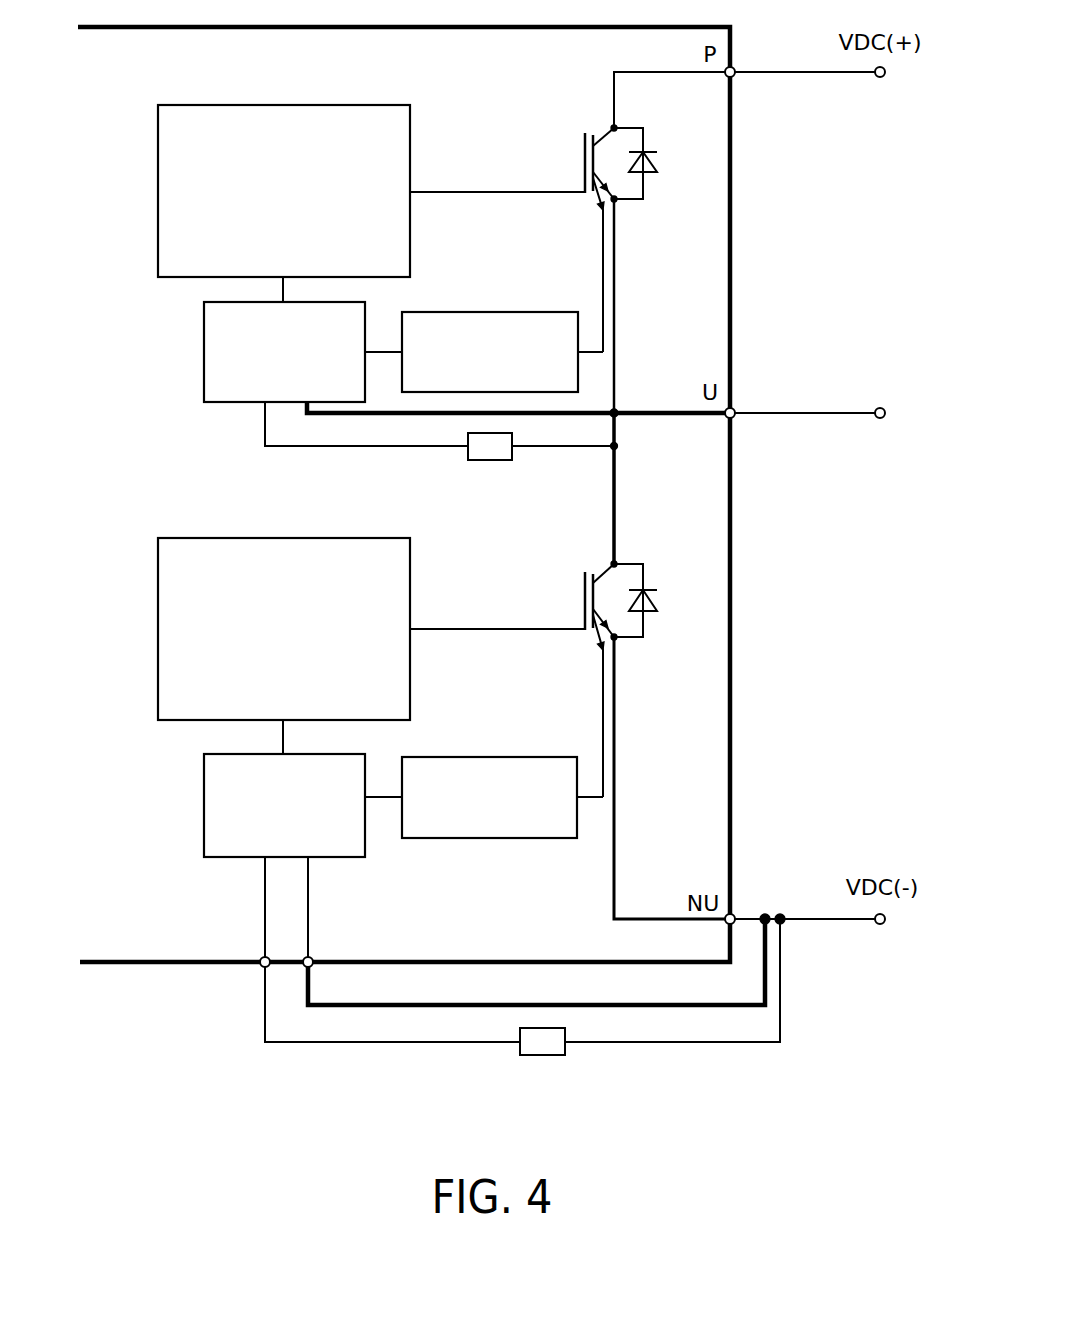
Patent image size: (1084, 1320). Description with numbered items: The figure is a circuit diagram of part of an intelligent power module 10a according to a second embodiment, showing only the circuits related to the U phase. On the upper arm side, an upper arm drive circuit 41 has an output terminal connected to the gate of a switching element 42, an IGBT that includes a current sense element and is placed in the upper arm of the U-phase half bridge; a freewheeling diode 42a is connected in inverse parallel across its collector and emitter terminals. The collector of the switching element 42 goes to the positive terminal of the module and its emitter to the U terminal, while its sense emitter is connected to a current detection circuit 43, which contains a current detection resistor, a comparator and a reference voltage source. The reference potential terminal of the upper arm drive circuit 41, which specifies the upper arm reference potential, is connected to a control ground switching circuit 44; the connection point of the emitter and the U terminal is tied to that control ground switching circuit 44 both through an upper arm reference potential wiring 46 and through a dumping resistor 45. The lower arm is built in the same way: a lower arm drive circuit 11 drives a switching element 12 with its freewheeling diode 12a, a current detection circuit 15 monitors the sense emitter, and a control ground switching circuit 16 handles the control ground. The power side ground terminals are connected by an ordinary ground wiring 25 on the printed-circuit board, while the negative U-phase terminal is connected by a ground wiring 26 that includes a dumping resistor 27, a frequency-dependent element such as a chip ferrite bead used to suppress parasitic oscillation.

The intelligent power module 10a is at (733, 297).
The upper arm drive circuit 41 is at (243, 103).
The switching element 42 is at (585, 142).
The freewheeling diode 42a is at (660, 162).
The current detection circuit 43 is at (497, 310).
The control ground switching circuit 44 is at (204, 350).
The dumping resistor 45 is at (490, 465).
The upper arm reference potential wiring 46 is at (597, 410).
The lower arm drive circuit 11 is at (245, 535).
The switching element 12 is at (585, 592).
The freewheeling diode 12a is at (660, 604).
The current detection circuit 15 is at (496, 755).
The control ground switching circuit 16 is at (204, 795).
The ground wiring 25 is at (582, 1003).
The ground wiring 26 is at (643, 1045).
The dumping resistor 27 is at (541, 1057).